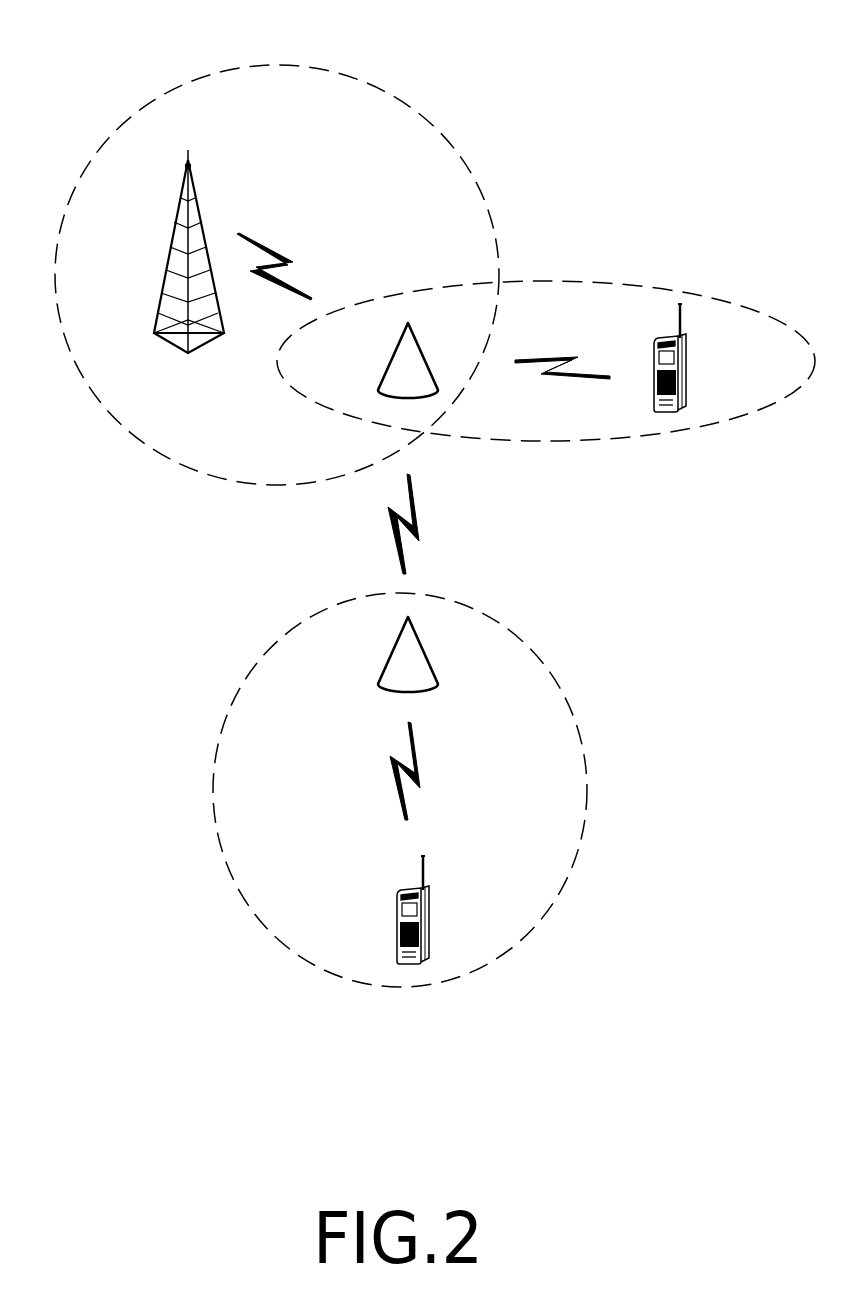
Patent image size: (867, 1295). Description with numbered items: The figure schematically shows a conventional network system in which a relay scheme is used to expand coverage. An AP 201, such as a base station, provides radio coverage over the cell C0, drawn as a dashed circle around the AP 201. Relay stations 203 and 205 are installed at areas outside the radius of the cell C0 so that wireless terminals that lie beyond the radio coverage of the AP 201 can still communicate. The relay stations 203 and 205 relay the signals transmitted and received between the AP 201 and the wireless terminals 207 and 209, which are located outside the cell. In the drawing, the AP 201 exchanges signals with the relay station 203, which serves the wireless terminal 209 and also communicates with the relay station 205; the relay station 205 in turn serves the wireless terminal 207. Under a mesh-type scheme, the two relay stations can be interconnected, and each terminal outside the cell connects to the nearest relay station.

The cell C0 is at (275, 65).
The AP 201 is at (168, 258).
The relay station 203 is at (391, 357).
The relay station 205 is at (391, 650).
The wireless terminal 207 is at (396, 930).
The wireless terminal 209 is at (689, 370).